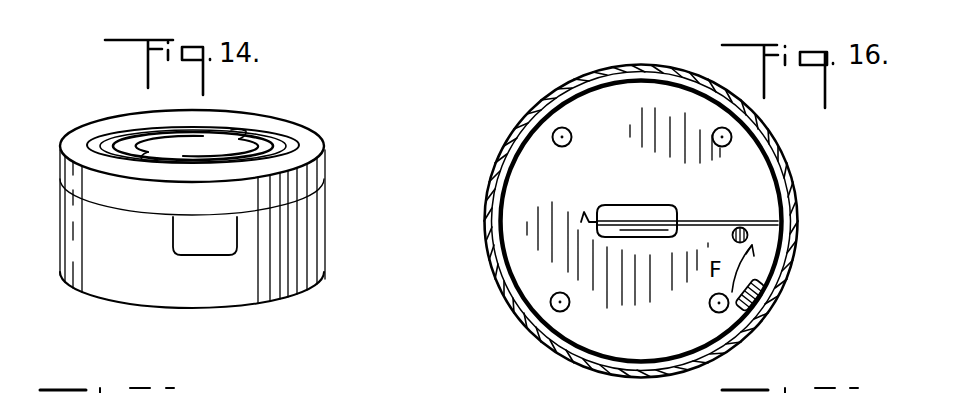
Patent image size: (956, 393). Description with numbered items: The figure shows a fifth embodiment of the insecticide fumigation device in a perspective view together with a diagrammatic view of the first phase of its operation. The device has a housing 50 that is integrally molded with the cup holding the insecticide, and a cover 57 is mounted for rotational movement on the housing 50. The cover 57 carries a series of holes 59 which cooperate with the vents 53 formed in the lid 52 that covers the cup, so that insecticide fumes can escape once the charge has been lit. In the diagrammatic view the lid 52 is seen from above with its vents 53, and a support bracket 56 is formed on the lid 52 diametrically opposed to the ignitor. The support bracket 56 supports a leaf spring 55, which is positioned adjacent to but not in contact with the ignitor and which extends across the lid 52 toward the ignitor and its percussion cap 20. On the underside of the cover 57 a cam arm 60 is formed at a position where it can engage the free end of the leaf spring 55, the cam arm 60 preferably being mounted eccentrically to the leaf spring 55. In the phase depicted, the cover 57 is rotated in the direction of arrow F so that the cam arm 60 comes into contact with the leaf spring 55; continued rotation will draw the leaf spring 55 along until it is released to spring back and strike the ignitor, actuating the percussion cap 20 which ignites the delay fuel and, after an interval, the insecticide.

In FIG. 16, the percussion cap 20 is at (748, 236).
In FIG. 14, the housing 50 is at (323, 245).
In FIG. 16, the lid 52 is at (533, 283).
In FIG. 16, the vents 53 is at (557, 307).
In FIG. 16, the leaf spring 55 is at (712, 221).
In FIG. 16, the support bracket 56 is at (603, 205).
In FIG. 14, the cover 57 is at (320, 167).
In FIG. 16, the cover 57 is at (783, 157).
In FIG. 14, the holes 59 is at (275, 137).
In FIG. 14, the cam arm 60 is at (222, 252).
In FIG. 16, the cam arm 60 is at (757, 300).